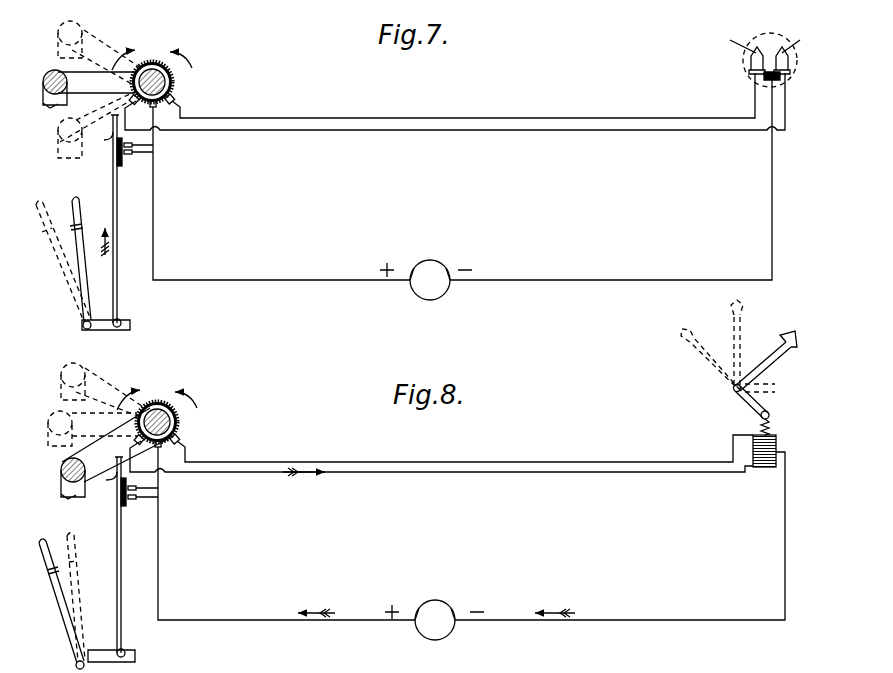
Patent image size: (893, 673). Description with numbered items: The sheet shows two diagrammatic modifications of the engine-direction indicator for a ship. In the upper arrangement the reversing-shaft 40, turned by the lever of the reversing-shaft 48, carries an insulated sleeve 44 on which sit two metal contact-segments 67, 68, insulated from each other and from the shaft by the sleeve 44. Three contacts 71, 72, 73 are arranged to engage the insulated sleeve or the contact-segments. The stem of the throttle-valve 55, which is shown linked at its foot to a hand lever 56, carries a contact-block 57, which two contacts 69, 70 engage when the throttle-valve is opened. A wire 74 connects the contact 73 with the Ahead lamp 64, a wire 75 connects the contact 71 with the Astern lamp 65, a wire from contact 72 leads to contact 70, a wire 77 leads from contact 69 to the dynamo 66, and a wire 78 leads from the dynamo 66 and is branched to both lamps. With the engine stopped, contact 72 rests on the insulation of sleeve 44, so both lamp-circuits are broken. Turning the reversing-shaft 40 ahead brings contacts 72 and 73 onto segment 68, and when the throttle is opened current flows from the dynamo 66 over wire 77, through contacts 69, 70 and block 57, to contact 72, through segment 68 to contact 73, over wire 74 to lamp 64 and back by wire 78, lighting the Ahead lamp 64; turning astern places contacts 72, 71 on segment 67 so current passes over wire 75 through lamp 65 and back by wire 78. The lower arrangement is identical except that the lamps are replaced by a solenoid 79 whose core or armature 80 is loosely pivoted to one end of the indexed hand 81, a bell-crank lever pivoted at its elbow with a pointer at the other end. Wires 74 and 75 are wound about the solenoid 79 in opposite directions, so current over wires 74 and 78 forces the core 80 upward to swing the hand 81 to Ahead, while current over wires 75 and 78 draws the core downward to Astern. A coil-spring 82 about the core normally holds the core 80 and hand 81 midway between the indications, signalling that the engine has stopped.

In FIG. 7, the reversing-shaft 40 is at (170, 68).
In FIG. 8, the reversing-shaft 40 is at (175, 408).
In FIG. 7, the insulated sleeve 44 is at (152, 61).
In FIG. 8, the insulated sleeve 44 is at (157, 401).
In FIG. 7, the lever of the reversing-shaft 48 is at (80, 62).
In FIG. 8, the lever of the reversing-shaft 48 is at (95, 404).
In FIG. 7, the stem of the throttle-valve 55 is at (117, 278).
In FIG. 8, the stem of the throttle-valve 55 is at (121, 606).
In FIG. 7, the lever 56 is at (73, 200).
In FIG. 8, the lever 56 is at (68, 639).
In FIG. 7, the contact-block 57 is at (120, 168).
In FIG. 8, the contact-block 57 is at (124, 510).
In FIG. 7, the Ahead lamp 64 is at (750, 63).
In FIG. 7, the Astern lamp 65 is at (790, 62).
In FIG. 7, the dynamo 66 is at (433, 265).
In FIG. 8, the dynamo 66 is at (439, 606).
In FIG. 7, the contact-segment 67 is at (126, 84).
In FIG. 8, the contact-segment 67 is at (135, 424).
In FIG. 7, the contact-segment 68 is at (174, 82).
In FIG. 8, the contact-segment 68 is at (179, 423).
In FIG. 7, the contact 69 is at (128, 156).
In FIG. 8, the contact 69 is at (133, 502).
In FIG. 7, the contact 70 is at (98, 142).
In FIG. 8, the contact 70 is at (100, 482).
In FIG. 7, the contact 71 is at (131, 101).
In FIG. 8, the contact 71 is at (136, 441).
In FIG. 7, the contact 72 is at (156, 107).
In FIG. 8, the contact 72 is at (161, 447).
In FIG. 7, the contact 73 is at (178, 101).
In FIG. 8, the contact 73 is at (183, 441).
In FIG. 7, the wire 74 is at (263, 117).
In FIG. 8, the wire 74 is at (267, 459).
In FIG. 7, the wire 75 is at (240, 133).
In FIG. 8, the wire 75 is at (243, 476).
In FIG. 7, the wire 77 is at (155, 199).
In FIG. 8, the wire 77 is at (160, 551).
In FIG. 7, the wire 78 is at (500, 281).
In FIG. 8, the wire 78 is at (786, 536).
In FIG. 8, the solenoid 79 is at (778, 444).
In FIG. 8, the core or armature 80 is at (767, 410).
In FIG. 8, the indexed hand 81 is at (770, 365).
In FIG. 8, the coil-spring 82 is at (760, 422).